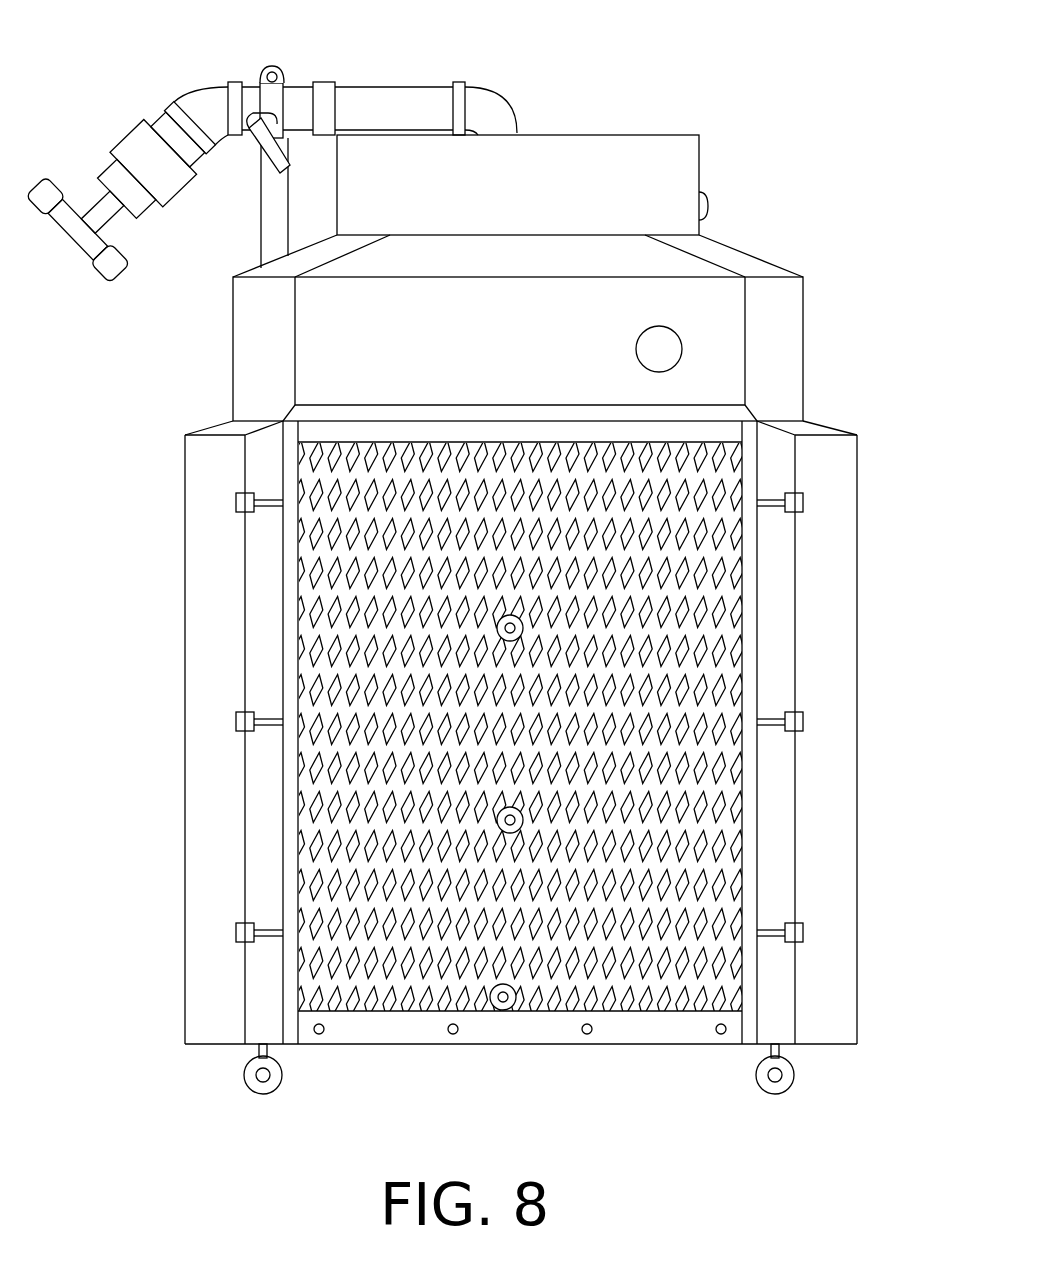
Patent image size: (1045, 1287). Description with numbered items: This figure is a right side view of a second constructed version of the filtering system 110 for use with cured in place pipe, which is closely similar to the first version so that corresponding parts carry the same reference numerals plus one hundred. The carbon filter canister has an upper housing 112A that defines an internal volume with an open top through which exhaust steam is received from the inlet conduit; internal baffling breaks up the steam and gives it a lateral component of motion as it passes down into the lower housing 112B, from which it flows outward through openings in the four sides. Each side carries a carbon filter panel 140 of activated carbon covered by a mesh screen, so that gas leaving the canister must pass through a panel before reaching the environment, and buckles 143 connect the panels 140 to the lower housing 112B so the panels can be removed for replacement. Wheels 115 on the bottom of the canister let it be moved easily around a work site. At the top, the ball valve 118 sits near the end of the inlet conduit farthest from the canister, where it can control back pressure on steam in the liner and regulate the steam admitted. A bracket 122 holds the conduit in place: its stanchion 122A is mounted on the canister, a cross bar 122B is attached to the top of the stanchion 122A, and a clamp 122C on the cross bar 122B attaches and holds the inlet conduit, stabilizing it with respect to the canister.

The filtering system 110 is at (816, 62).
The upper housing 112A is at (701, 168).
The lower housing 112B is at (262, 830).
The wheels 115 is at (266, 1090).
The ball valve 118 is at (135, 137).
The bracket 122 is at (250, 200).
The stanchion 122A is at (272, 236).
The cross bar 122B is at (284, 130).
The clamp 122C is at (268, 100).
The carbon filter panel 140 is at (860, 460).
The buckles 143 is at (266, 718).